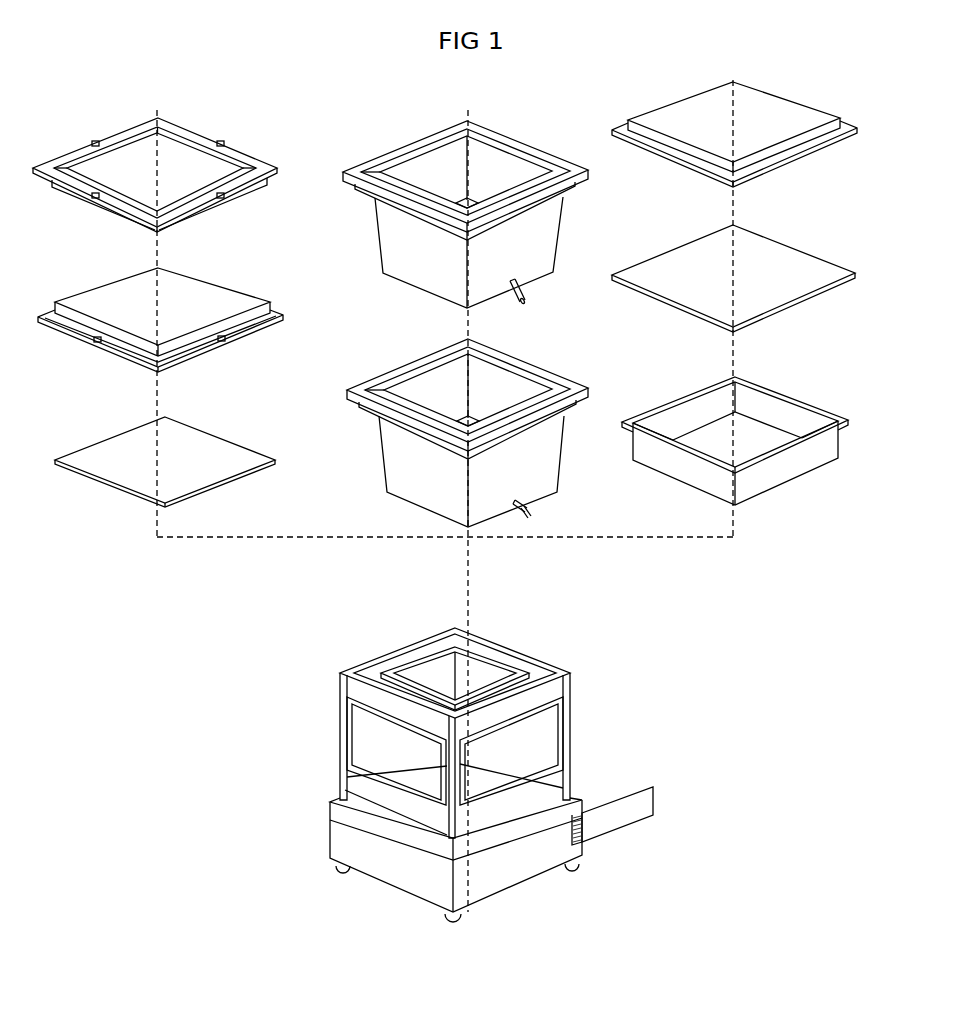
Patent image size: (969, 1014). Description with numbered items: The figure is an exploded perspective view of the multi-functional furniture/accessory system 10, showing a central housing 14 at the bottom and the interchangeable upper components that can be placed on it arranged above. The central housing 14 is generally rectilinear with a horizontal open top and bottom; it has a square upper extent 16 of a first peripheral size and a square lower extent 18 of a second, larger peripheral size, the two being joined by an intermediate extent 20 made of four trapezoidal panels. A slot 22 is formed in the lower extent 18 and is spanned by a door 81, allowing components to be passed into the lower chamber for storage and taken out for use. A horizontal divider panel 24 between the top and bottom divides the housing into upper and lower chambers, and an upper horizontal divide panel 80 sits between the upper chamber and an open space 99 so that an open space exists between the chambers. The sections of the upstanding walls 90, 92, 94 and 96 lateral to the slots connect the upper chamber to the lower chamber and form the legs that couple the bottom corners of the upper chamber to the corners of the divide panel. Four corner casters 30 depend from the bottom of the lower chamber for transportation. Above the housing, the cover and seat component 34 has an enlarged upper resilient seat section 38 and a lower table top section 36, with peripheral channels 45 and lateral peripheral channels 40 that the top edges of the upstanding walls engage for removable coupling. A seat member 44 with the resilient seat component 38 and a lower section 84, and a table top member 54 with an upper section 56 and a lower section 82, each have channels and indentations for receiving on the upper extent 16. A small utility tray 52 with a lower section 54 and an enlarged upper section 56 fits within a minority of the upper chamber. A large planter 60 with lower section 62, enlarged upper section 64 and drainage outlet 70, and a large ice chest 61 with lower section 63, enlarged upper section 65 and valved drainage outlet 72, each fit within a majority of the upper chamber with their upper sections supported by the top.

The multi-functional furniture/accessory system 10 is at (150, 102).
The central housing 14 is at (398, 642).
The upper extent 16 is at (572, 690).
The lower extent 18 is at (377, 850).
The intermediate extent 20 is at (338, 808).
The slot 22 is at (517, 860).
The horizontal divider panel 24 is at (418, 797).
The corner casters 30 is at (462, 922).
The cover and seat component 34 is at (87, 140).
The lower section 36 is at (195, 152).
The upper resilient seat section 38 is at (208, 308).
The lateral peripheral channels 40 is at (535, 658).
The seat member 44 is at (663, 97).
The peripheral channels 45 is at (175, 127).
The small utility tray 52 is at (686, 390).
The table top member 54 is at (663, 245).
The upper section 56 is at (768, 258).
The large planter 60 is at (528, 140).
The large ice chest 61 is at (560, 370).
The lower section 62 is at (395, 258).
The lower section 63 is at (398, 473).
The upper section 64 is at (407, 146).
The upper section 65 is at (421, 361).
The drainage outlet 70 is at (526, 294).
The drainage outlet 72 is at (533, 515).
The upper horizontal divide panel 80 is at (97, 441).
The door 81 is at (622, 818).
The lower section 82 is at (813, 303).
The lower section 84 is at (826, 150).
The upstanding wall 90 is at (571, 727).
The upstanding wall 92 is at (398, 870).
The upstanding wall 94 is at (339, 727).
The upstanding wall 96 is at (458, 660).
The open space 99 is at (403, 753).